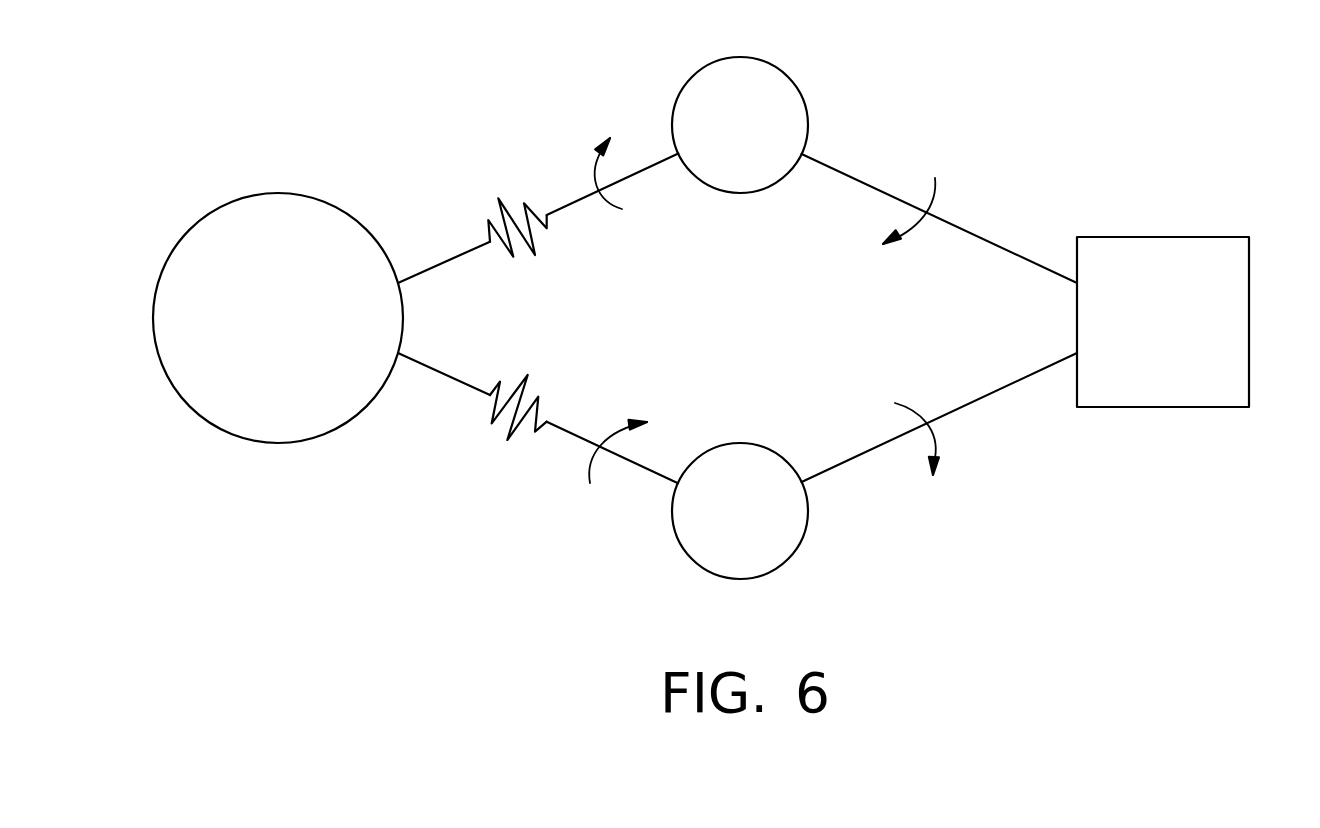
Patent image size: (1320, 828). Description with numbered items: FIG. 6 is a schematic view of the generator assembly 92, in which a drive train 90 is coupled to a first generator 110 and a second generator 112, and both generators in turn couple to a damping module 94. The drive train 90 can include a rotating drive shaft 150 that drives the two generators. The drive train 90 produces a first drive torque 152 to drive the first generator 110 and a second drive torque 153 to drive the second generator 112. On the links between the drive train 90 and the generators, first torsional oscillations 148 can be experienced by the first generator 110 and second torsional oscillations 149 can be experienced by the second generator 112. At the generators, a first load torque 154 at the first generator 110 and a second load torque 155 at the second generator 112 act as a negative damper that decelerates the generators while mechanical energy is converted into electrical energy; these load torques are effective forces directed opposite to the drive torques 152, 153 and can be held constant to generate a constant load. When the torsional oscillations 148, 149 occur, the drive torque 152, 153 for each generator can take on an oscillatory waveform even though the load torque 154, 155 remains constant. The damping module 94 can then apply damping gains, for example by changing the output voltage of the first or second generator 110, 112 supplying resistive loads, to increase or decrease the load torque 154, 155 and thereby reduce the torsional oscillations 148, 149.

The drive train 90 is at (261, 334).
The generator assembly 92 is at (482, 56).
The damping module 94 is at (1185, 336).
The first generator 110 is at (764, 141).
The second generator 112 is at (767, 526).
The first torsional oscillations 148 is at (499, 193).
The second torsional oscillations 149 is at (508, 440).
The rotating drive shaft 150 is at (272, 193).
The first drive torque 152 is at (608, 212).
The second drive torque 153 is at (590, 468).
The first load torque 154 is at (935, 192).
The second load torque 155 is at (927, 415).